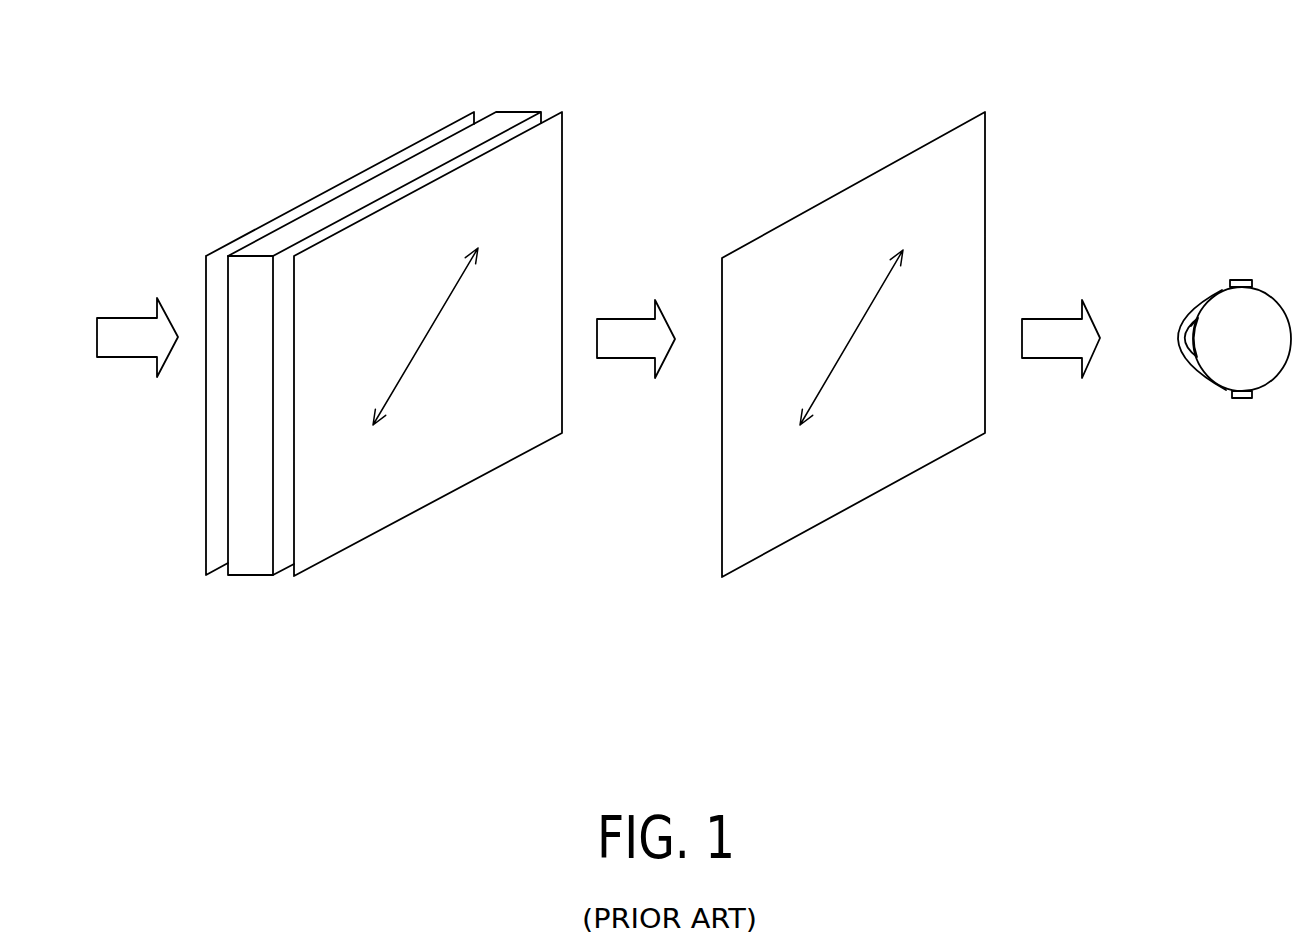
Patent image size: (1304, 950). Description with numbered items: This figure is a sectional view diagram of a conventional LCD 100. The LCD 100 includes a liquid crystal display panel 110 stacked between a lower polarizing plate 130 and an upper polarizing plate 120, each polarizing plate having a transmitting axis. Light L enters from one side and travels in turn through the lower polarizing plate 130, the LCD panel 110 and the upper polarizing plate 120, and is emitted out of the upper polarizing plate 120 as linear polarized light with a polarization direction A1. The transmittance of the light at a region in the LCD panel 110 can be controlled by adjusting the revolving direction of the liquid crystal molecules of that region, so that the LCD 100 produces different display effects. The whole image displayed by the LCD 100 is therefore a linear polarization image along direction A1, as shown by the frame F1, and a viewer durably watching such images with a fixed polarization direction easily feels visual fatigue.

The LCD 100 is at (425, 355).
The liquid crystal display panel 110 is at (518, 112).
The upper polarizing plate 120 is at (563, 130).
The lower polarizing plate 130 is at (457, 121).
The polarization direction A1 is at (647, 312).
The frame F1 is at (853, 328).
The light L is at (137, 318).